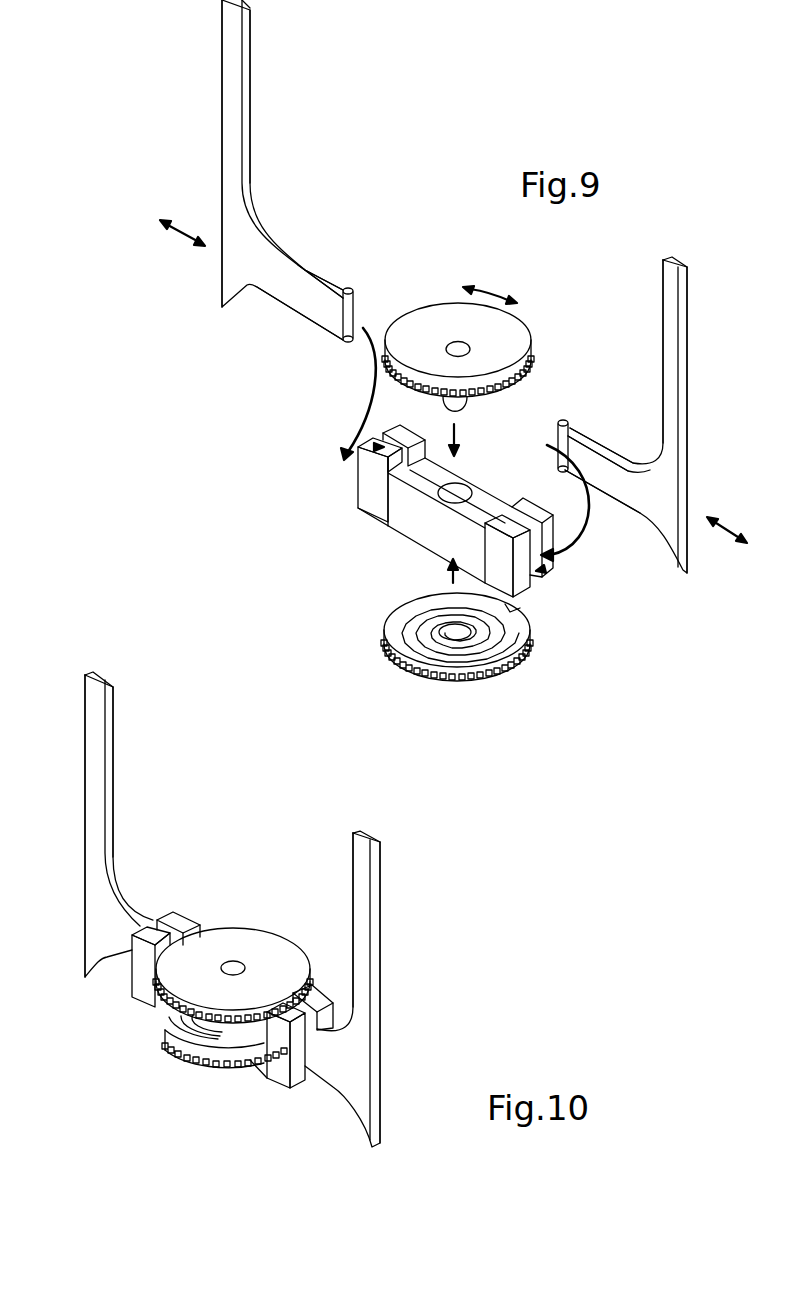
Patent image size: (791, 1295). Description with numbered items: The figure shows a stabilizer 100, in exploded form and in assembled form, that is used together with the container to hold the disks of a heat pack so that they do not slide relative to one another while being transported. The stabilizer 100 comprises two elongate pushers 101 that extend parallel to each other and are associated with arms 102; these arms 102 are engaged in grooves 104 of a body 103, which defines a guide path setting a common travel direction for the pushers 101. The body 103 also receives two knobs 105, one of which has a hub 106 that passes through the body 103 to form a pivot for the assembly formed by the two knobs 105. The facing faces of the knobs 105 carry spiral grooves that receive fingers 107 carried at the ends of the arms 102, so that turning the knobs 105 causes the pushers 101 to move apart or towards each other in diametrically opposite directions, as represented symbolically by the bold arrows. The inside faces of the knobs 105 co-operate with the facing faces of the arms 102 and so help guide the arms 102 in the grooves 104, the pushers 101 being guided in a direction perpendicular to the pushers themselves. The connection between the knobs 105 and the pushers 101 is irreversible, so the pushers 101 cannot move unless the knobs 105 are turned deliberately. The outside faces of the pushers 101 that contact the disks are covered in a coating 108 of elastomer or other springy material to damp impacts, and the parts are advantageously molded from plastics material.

In FIG. 9, the stabilizer 100 is at (222, 388).
In FIG. 10, the stabilizer 100 is at (425, 921).
In FIG. 9, the pusher 101 is at (232, 170).
In FIG. 10, the pusher 101 is at (93, 903).
In FIG. 9, the arm 102 is at (297, 283).
In FIG. 9, the body 103 is at (435, 535).
In FIG. 10, the body 103 is at (280, 1080).
In FIG. 9, the groove 104 is at (378, 455).
In FIG. 10, the groove 104 is at (232, 1000).
In FIG. 9, the knob 105 is at (432, 305).
In FIG. 10, the knob 105 is at (220, 932).
In FIG. 9, the hub 106 is at (460, 414).
In FIG. 9, the finger 107 is at (347, 292).
In FIG. 9, the coating 108 is at (224, 34).
In FIG. 10, the coating 108 is at (88, 673).